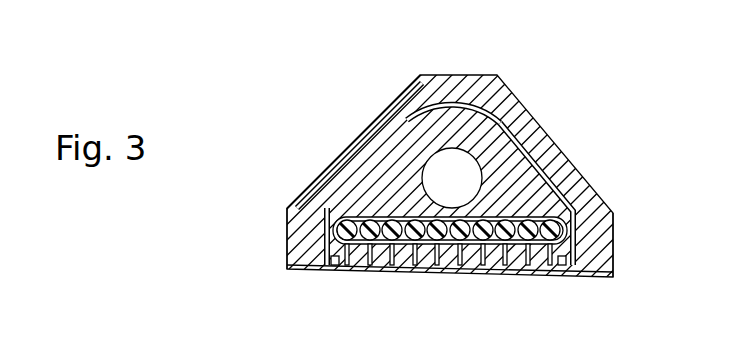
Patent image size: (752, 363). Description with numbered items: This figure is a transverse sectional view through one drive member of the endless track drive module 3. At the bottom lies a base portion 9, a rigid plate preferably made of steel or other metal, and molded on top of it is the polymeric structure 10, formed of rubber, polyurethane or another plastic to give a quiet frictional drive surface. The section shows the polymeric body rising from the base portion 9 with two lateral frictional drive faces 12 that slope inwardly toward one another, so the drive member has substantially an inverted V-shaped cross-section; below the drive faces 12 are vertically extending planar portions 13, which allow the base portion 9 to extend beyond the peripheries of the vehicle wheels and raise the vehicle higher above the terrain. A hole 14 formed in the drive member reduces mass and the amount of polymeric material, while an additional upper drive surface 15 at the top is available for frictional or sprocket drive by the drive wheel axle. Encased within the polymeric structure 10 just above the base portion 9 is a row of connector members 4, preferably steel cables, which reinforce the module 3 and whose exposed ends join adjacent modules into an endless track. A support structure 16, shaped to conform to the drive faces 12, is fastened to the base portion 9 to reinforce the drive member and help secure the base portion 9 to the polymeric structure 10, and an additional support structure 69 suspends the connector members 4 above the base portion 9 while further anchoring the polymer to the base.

The endless track drive module 3 is at (541, 100).
The connector member 4 is at (370, 259).
The base portion 9 is at (507, 275).
The polymeric structure 10 is at (615, 228).
The drive face 12 is at (313, 187).
The vertically extending planar portion 13 is at (288, 242).
The hole 14 is at (443, 167).
The upper drive surface 15 is at (470, 76).
The support structure 16 is at (383, 152).
The additional support structure 69 is at (550, 178).